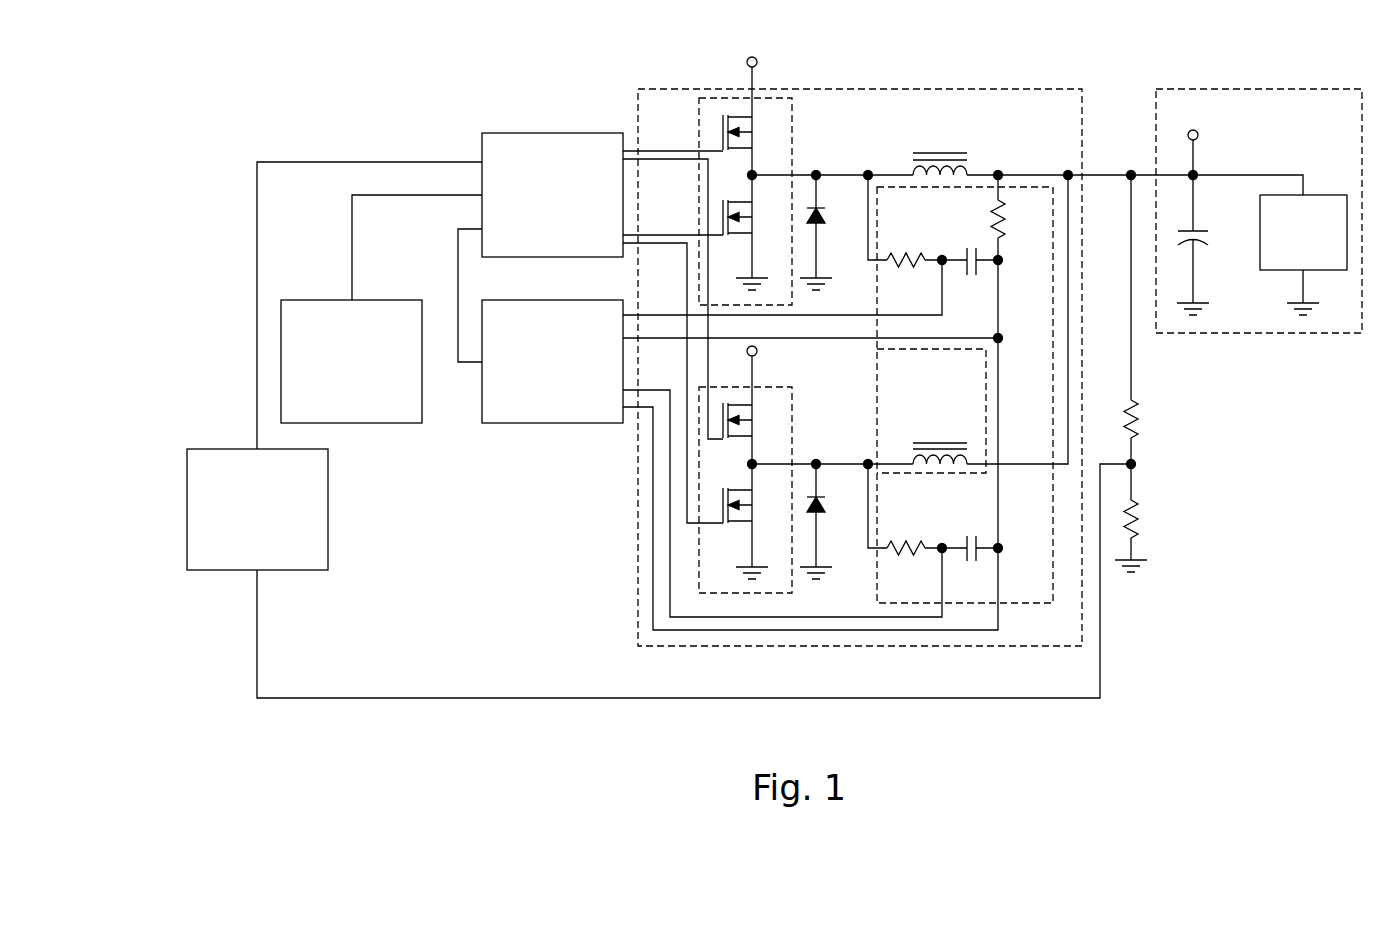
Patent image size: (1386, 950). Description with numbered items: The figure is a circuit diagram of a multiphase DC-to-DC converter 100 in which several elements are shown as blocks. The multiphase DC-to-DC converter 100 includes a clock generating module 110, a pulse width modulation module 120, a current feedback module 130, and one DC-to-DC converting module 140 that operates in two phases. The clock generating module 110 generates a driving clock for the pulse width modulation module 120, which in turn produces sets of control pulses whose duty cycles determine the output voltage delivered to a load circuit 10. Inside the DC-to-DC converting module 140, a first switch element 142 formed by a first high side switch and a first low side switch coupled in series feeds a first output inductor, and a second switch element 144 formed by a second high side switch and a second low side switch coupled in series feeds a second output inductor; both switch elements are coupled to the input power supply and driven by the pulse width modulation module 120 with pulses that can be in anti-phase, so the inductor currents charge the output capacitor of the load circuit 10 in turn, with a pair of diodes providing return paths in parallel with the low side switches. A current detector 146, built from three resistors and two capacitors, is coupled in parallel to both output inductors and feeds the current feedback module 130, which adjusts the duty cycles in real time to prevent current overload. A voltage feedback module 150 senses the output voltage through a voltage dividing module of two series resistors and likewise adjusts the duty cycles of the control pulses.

The multiphase DC-to-DC converter 100 is at (196, 58).
The load circuit 10 is at (1257, 89).
The clock generating module 110 is at (333, 411).
The pulse width modulation module 120 is at (534, 243).
The current feedback module 130 is at (534, 411).
The DC-to-DC converting module 140 is at (638, 117).
The first switch element 142 is at (792, 117).
The second switch element 144 is at (699, 563).
The current detector 146 is at (1028, 603).
The voltage feedback module 150 is at (239, 558).